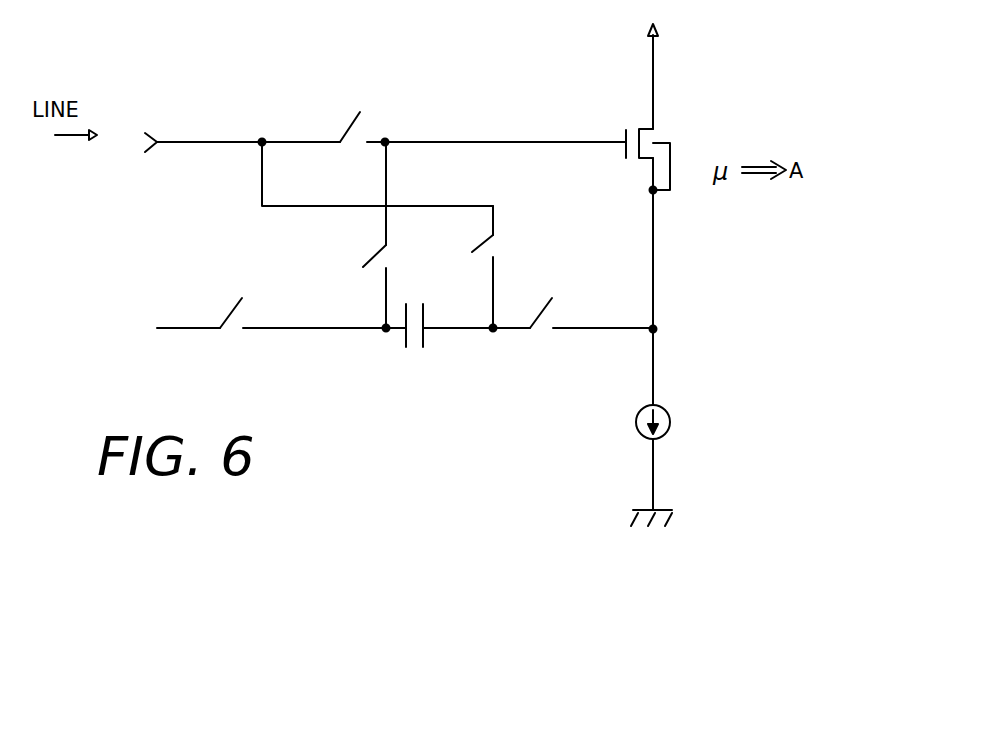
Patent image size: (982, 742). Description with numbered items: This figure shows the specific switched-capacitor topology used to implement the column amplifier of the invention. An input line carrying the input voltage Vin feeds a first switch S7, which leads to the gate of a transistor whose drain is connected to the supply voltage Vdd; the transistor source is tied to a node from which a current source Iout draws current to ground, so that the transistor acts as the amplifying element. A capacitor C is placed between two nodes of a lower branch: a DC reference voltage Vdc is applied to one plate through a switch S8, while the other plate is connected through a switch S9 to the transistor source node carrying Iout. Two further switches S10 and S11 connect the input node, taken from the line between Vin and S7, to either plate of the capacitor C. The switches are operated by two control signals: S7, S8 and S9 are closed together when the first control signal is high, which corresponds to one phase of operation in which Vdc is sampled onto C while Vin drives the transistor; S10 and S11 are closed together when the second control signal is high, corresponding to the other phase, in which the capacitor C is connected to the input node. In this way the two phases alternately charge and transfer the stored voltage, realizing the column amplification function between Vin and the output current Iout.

The switch S7 is at (336, 120).
The switch S8 is at (303, 338).
The switch S9 is at (573, 339).
The switch S10 is at (354, 235).
The switch S11 is at (467, 267).
The capacitor C is at (439, 343).
The input voltage Vin is at (199, 161).
The DC voltage Vdc is at (177, 345).
The supply voltage Vdd is at (680, 29).
The output current source Iout is at (682, 425).